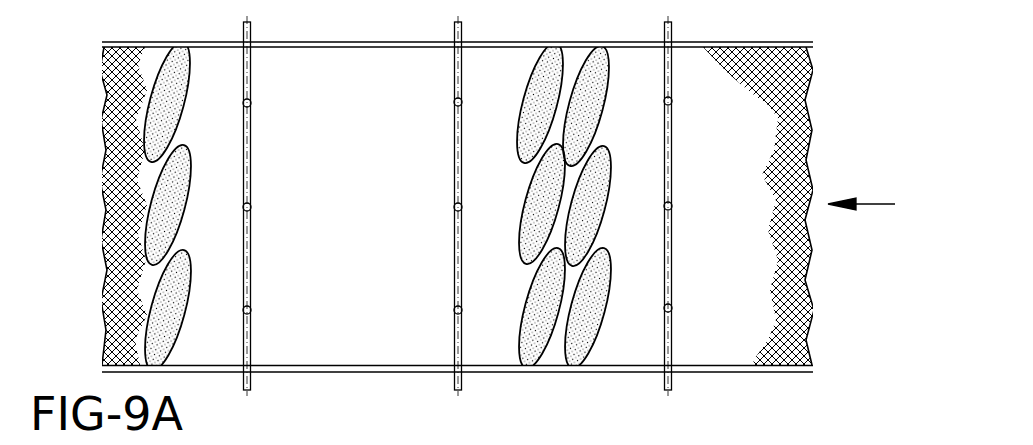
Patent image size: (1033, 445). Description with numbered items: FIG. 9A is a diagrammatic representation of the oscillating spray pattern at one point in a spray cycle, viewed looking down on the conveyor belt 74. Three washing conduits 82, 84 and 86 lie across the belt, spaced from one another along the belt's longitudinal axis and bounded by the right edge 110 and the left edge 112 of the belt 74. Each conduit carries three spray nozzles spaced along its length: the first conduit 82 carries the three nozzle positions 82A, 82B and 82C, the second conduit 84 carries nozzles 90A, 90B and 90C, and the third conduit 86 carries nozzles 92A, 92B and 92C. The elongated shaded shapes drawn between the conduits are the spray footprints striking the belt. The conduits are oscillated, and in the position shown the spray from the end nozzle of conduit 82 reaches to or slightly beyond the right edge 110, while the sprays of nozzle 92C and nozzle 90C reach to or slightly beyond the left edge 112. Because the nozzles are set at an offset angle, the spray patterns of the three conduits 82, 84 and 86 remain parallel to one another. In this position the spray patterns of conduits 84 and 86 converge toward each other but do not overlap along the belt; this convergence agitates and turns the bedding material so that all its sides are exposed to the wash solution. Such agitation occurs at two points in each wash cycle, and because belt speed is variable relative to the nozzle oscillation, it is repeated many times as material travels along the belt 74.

The conveyor belt 74 is at (790, 90).
The washing conduit 82 is at (253, 237).
The first node 82A is at (252, 101).
The second node 82B is at (252, 205).
The third node 82C is at (252, 308).
The washing conduit 84 is at (455, 265).
The washing conduit 86 is at (671, 265).
The spray nozzle 90A is at (454, 105).
The spray nozzle 90B is at (454, 210).
The spray nozzle 90C is at (454, 313).
The spray nozzle 92A is at (672, 105).
The spray nozzle 92B is at (672, 209).
The spray nozzle 92C is at (672, 311).
The right edge 110 is at (440, 42).
The left edge 112 is at (430, 373).